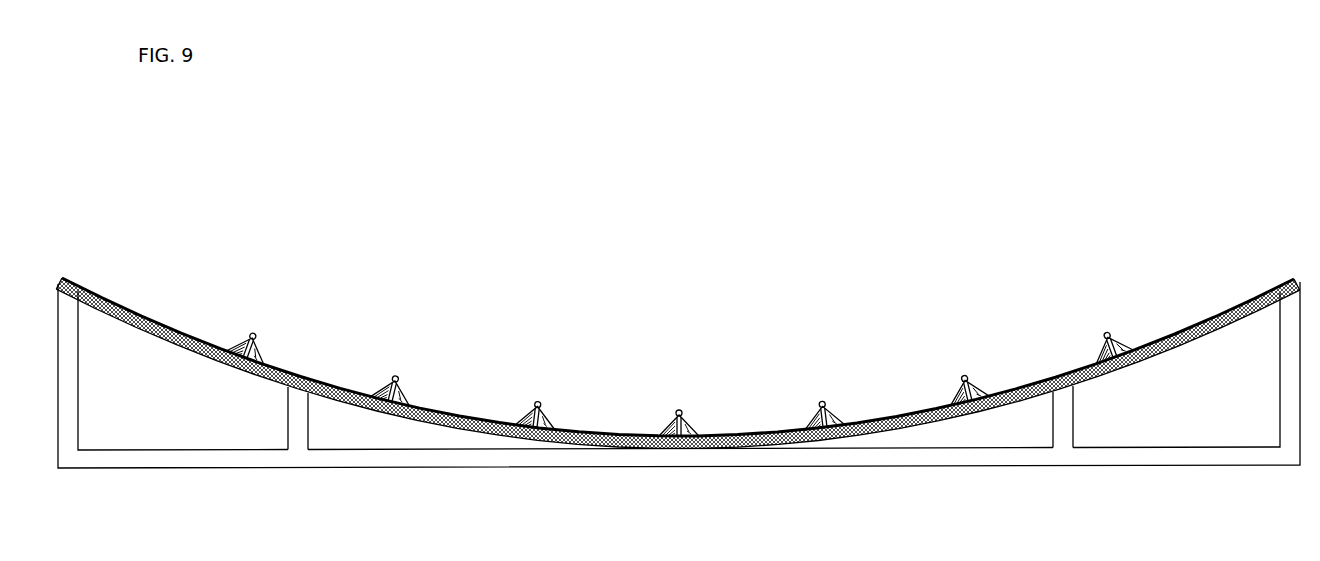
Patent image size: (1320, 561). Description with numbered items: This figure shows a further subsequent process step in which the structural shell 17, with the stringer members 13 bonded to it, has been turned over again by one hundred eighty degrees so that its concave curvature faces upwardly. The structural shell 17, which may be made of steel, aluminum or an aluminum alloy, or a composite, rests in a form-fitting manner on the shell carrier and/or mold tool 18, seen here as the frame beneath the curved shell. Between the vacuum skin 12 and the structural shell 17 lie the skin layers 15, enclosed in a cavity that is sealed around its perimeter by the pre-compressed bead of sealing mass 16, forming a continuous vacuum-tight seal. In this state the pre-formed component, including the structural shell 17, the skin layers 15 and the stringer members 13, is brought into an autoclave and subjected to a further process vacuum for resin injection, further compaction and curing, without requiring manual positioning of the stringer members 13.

The vacuum skin 12 is at (681, 412).
The stringer members 13 is at (691, 428).
The skin layers 15 is at (867, 420).
The sealing mass 16 is at (118, 308).
The structural shell 17 is at (910, 418).
The shell carrier and/or mold tool 18 is at (812, 458).